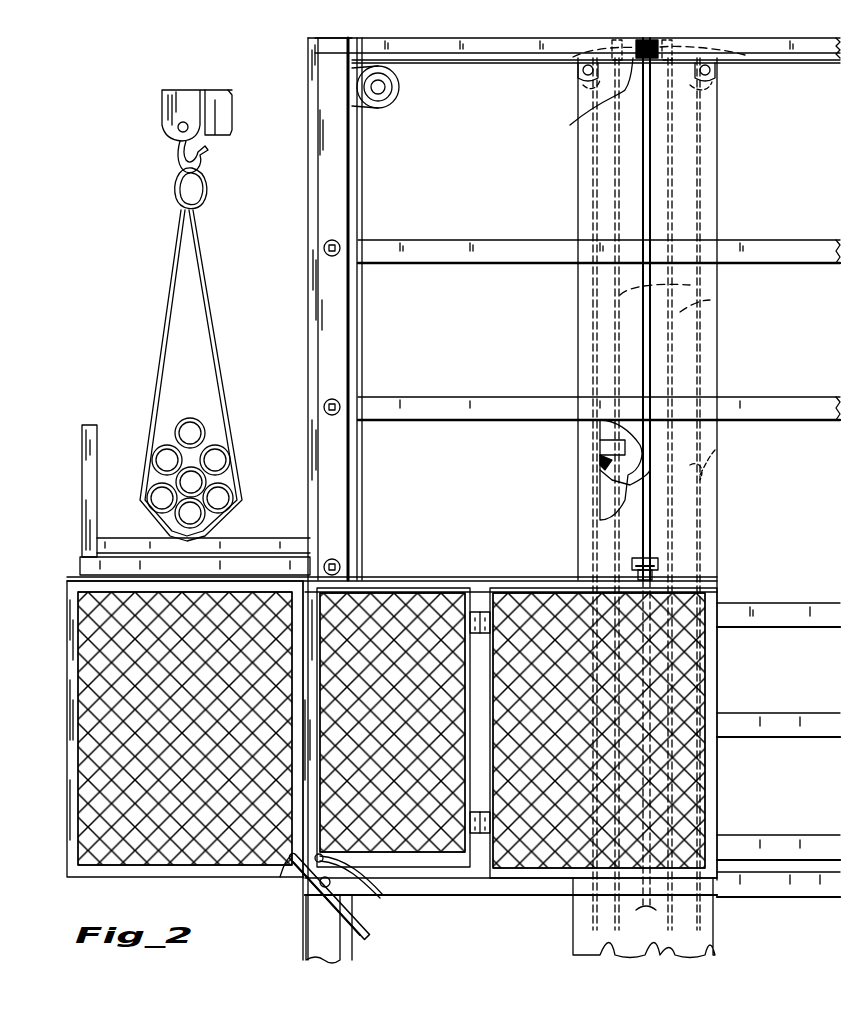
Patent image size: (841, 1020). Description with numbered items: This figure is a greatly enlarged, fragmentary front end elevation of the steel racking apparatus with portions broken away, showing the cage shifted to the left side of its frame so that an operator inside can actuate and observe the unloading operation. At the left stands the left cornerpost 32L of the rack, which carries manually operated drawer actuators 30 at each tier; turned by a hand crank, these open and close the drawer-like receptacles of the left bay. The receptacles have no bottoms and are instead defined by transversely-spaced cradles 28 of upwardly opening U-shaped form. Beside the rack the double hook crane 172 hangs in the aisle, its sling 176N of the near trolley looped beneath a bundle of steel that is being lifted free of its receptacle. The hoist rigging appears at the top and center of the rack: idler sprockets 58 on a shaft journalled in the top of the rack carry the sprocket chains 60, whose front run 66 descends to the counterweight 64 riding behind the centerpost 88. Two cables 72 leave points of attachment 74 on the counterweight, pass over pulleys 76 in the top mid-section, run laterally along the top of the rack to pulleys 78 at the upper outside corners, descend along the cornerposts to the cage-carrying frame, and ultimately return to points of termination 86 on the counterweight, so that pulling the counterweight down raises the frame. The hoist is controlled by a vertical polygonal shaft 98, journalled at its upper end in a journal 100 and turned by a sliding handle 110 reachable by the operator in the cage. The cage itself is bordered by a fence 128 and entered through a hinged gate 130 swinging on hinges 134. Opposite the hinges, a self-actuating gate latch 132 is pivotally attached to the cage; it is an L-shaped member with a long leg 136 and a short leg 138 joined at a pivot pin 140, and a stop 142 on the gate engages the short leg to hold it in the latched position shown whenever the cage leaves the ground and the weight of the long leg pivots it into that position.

The cradle 28 is at (82, 464).
The drawer actuator 30 is at (340, 248).
The left cornerpost 32L is at (318, 210).
The idler sprocket 58 is at (570, 62).
The sprocket chain 60 is at (712, 310).
The counterweight 64 is at (600, 485).
The front run 66 is at (580, 410).
The cable 72 is at (505, 62).
The point of attachment 74 is at (600, 462).
The pulley 76 is at (575, 90).
The pulley 78 is at (400, 90).
The point of termination 86 is at (592, 538).
The centerpost 88 is at (717, 368).
The shaft 98 is at (650, 175).
The journal 100 is at (578, 125).
The handle 110 is at (665, 545).
The fence 128 is at (90, 818).
The hinged gate 130 is at (382, 615).
The self-actuating gate latch 132 is at (303, 895).
The hinge 134 is at (470, 615).
The long leg 136 is at (368, 930).
The short leg 138 is at (300, 865).
The pivot pin 140 is at (312, 872).
The stop 142 is at (383, 893).
The double hook crane 172 is at (185, 108).
The sling 176N is at (168, 298).